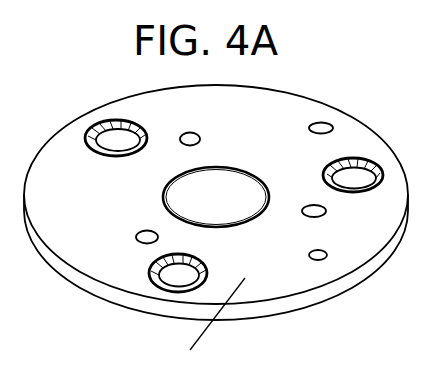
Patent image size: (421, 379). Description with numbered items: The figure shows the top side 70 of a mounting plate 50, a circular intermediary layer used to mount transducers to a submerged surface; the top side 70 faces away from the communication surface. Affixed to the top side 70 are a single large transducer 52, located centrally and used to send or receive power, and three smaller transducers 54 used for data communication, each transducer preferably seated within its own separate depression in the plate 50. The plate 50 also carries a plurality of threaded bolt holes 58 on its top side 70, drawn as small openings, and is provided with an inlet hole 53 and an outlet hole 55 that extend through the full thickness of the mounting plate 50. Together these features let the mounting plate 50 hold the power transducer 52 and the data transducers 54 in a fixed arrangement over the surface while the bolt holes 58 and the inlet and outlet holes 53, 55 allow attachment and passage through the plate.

The mounting plate 50 is at (102, 267).
The large transducer 52 is at (247, 203).
The inlet hole 53 is at (326, 256).
The smaller transducer 54 is at (353, 173).
The outlet hole 55 is at (322, 123).
The threaded bolt holes 58 is at (182, 135).
The top side 70 is at (201, 328).